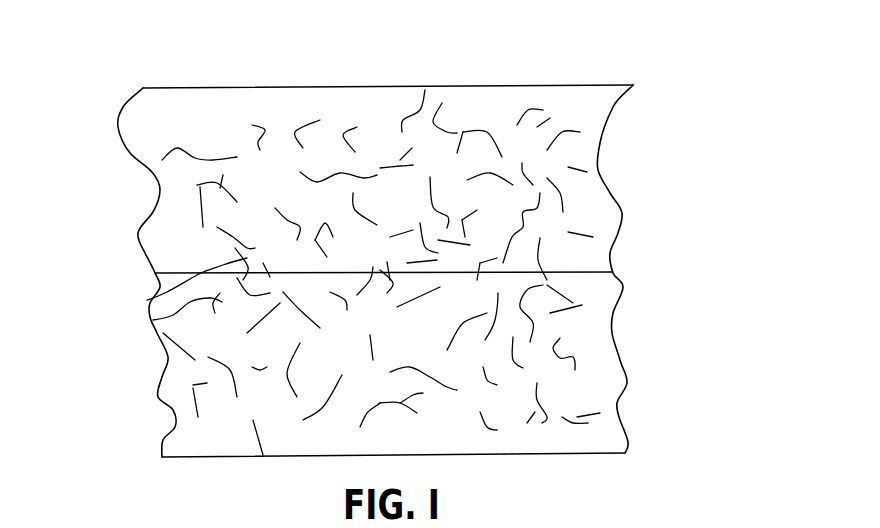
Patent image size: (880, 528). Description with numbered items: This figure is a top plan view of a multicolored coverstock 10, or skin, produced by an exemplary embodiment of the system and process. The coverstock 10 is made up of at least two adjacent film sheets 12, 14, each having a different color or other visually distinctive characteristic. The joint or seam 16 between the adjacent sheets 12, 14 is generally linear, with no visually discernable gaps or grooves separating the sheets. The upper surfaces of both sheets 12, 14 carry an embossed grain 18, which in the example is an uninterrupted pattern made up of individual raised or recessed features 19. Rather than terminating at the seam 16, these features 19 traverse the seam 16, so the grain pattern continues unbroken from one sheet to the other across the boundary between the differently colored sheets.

The coverstock 10 is at (624, 68).
The film sheet 12 is at (573, 193).
The film sheet 14 is at (590, 370).
The seam 16 is at (575, 266).
The embossed grain 18 is at (190, 234).
The raised or recessed features 19 is at (153, 320).